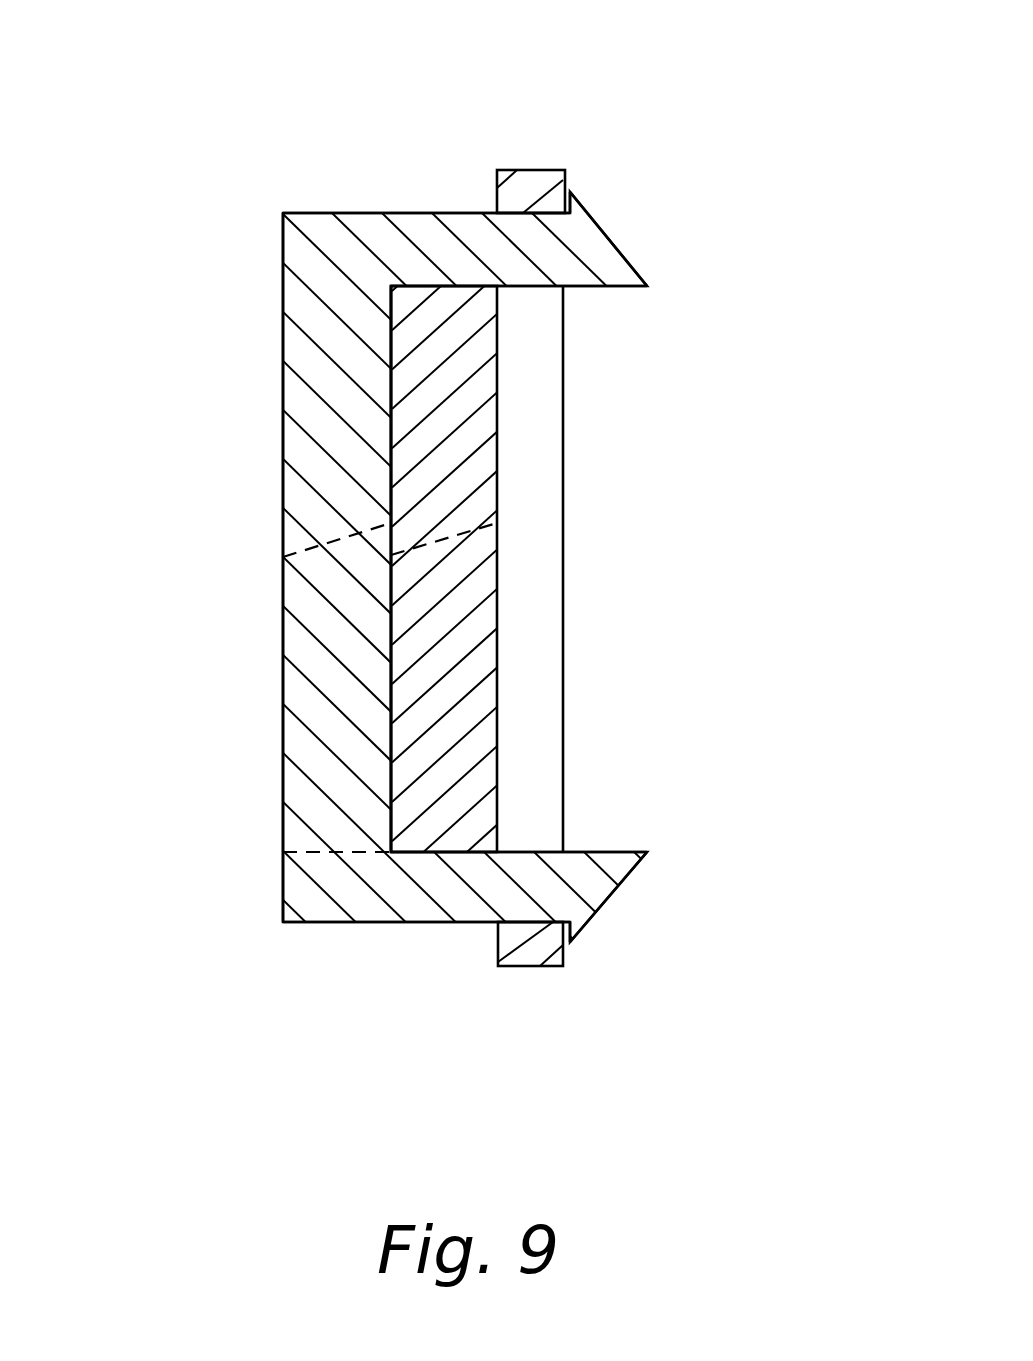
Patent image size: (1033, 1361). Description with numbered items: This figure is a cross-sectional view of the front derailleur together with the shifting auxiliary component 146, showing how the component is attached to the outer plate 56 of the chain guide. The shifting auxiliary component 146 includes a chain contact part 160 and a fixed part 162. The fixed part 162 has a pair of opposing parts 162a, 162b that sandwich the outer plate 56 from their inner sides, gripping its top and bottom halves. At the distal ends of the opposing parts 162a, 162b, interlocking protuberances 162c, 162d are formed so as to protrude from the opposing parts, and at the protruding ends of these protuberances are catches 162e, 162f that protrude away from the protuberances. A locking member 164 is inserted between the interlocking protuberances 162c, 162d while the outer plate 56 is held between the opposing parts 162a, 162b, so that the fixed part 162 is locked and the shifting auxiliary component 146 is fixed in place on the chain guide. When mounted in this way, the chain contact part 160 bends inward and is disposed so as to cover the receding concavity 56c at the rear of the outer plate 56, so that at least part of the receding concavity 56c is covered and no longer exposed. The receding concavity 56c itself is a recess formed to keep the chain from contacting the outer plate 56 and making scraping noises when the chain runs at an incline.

The fixed part 162 is at (362, 190).
The opposing part 162a is at (430, 213).
The opposing part 162b is at (397, 900).
The interlocking protuberance 162c is at (582, 243).
The interlocking protuberance 162d is at (538, 902).
The catch 162e is at (570, 192).
The catch 162f is at (600, 900).
The locking member 164 is at (528, 170).
The outer plate 56 is at (488, 538).
The receding concavity 56c is at (391, 736).
The shifting auxiliary component 146 is at (272, 700).
The chain contact part 160 is at (283, 802).